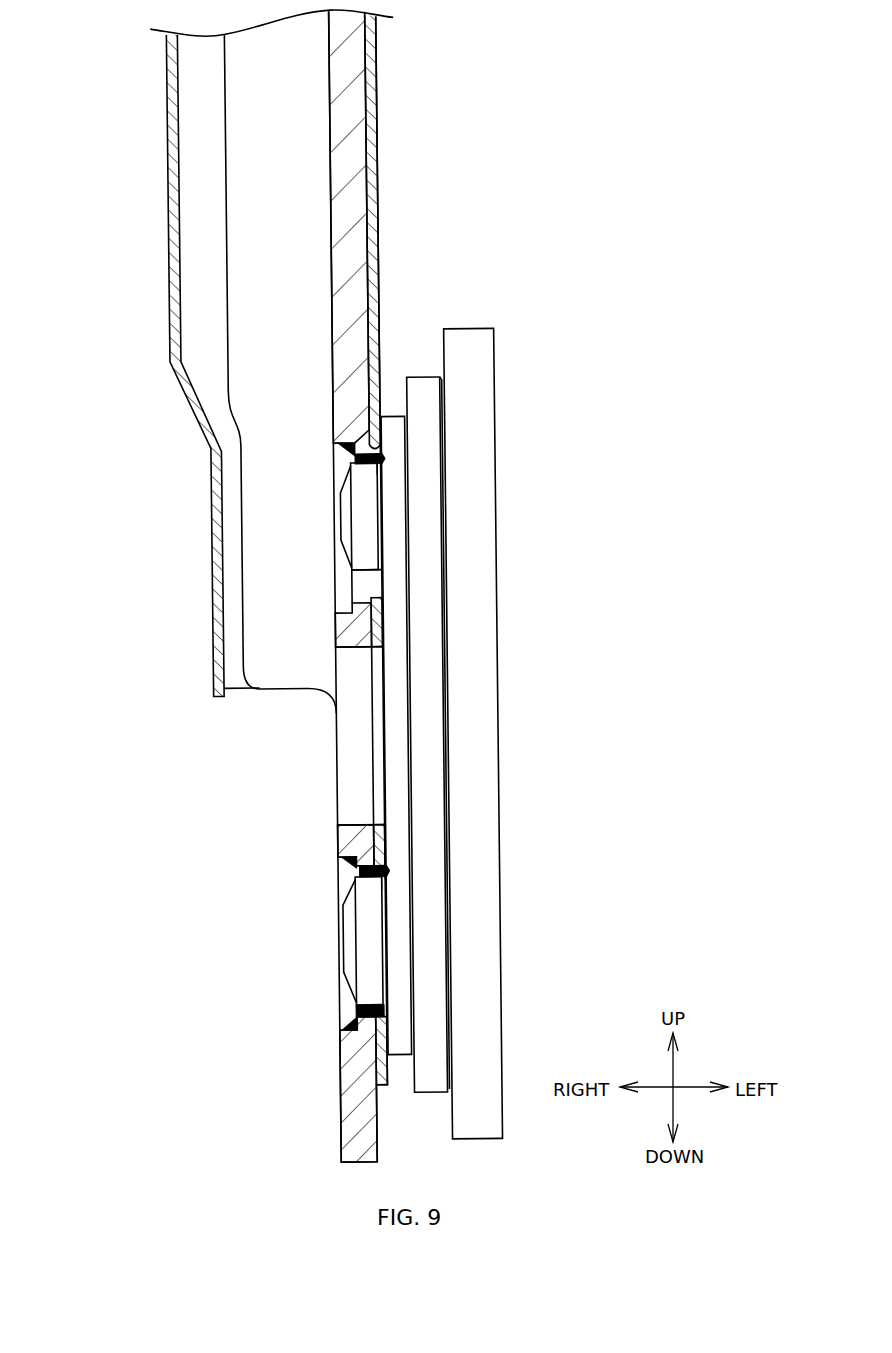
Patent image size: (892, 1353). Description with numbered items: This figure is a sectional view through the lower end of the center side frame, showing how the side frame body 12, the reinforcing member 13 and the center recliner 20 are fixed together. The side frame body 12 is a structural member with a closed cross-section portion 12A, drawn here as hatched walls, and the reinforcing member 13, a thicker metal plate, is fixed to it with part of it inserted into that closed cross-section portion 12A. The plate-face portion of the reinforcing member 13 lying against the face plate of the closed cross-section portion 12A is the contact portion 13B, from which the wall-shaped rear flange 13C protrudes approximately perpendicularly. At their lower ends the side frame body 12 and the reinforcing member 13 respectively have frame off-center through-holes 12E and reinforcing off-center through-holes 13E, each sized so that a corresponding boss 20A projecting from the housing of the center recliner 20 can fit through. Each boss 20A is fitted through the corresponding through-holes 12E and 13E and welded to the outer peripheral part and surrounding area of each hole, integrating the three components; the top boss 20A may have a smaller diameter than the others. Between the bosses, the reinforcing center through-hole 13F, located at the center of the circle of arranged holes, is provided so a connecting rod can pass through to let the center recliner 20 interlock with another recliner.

The side frame body 12 is at (378, 132).
The closed cross-section portion 12A is at (168, 112).
The frame off-center through-hole 12E is at (382, 462).
The reinforcing member 13 is at (340, 1077).
The contact portion 13B is at (333, 233).
The rear flange 13C is at (225, 185).
The reinforcing off-center through-hole 13E is at (356, 455).
The reinforcing center through-hole 13F is at (347, 748).
The center recliner 20 is at (497, 402).
The boss 20A is at (345, 513).